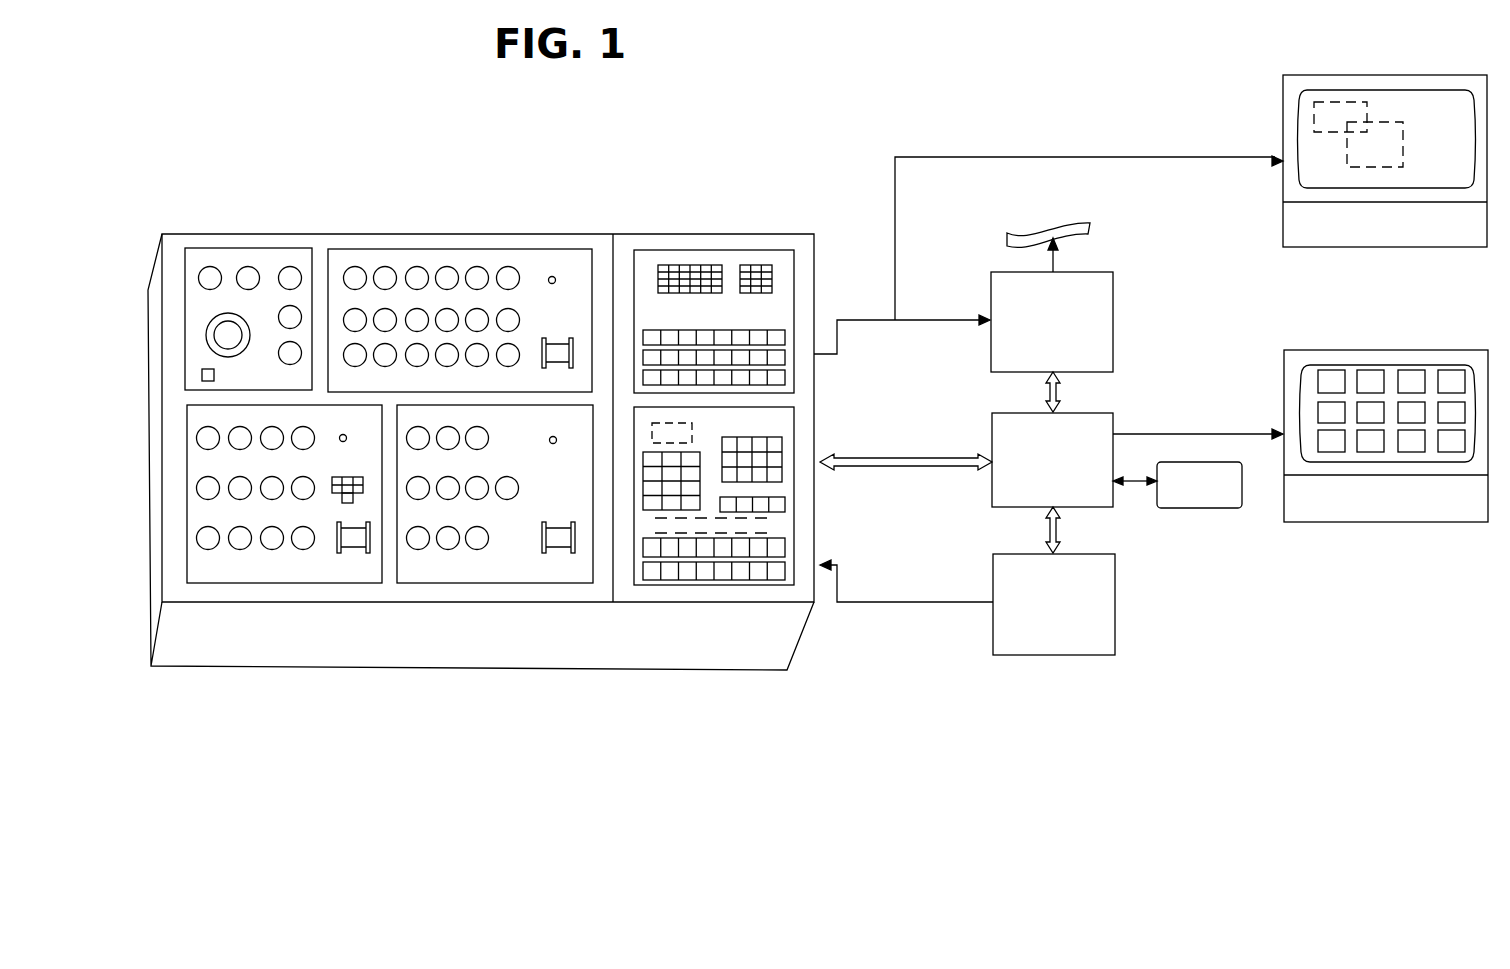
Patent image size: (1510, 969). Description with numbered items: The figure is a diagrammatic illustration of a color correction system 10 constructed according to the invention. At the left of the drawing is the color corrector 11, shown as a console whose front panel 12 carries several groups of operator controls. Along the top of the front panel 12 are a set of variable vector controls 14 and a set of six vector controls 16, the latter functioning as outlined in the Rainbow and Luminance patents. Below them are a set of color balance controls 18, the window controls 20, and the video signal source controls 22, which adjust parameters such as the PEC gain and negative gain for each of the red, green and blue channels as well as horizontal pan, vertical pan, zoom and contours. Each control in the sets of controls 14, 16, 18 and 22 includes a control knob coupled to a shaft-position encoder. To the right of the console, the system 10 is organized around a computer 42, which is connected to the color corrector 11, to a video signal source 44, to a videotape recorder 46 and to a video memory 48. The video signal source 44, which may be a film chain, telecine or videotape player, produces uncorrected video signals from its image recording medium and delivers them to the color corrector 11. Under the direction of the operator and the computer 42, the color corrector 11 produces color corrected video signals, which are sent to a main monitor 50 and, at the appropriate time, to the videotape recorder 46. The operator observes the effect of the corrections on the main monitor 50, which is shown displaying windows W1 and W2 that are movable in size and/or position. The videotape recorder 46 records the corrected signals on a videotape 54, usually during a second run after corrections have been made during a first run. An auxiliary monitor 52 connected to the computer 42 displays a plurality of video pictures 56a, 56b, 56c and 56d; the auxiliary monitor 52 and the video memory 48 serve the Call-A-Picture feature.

The color correction system 10 is at (818, 347).
The color corrector 11 is at (481, 433).
The front panel 12 is at (699, 392).
The variable vector controls 14 is at (248, 299).
The six vector controls 16 is at (460, 303).
The color balance controls 18 is at (284, 522).
The window controls 20 is at (345, 478).
The video signal source controls 22 is at (495, 522).
The computer 42 is at (1079, 448).
The video signal source 44 is at (1083, 605).
The videotape recorder 46 is at (1079, 310).
The video memory 48 is at (1177, 508).
The main monitor 50 is at (1385, 178).
The auxiliary monitor 52 is at (1386, 445).
The videotape 54 is at (1052, 234).
The video picture 56a is at (1320, 359).
The video picture 56b is at (1375, 359).
The video picture 56c is at (1419, 359).
The video picture 56d is at (1460, 359).
The window W1 is at (1371, 114).
The window W2 is at (1403, 144).